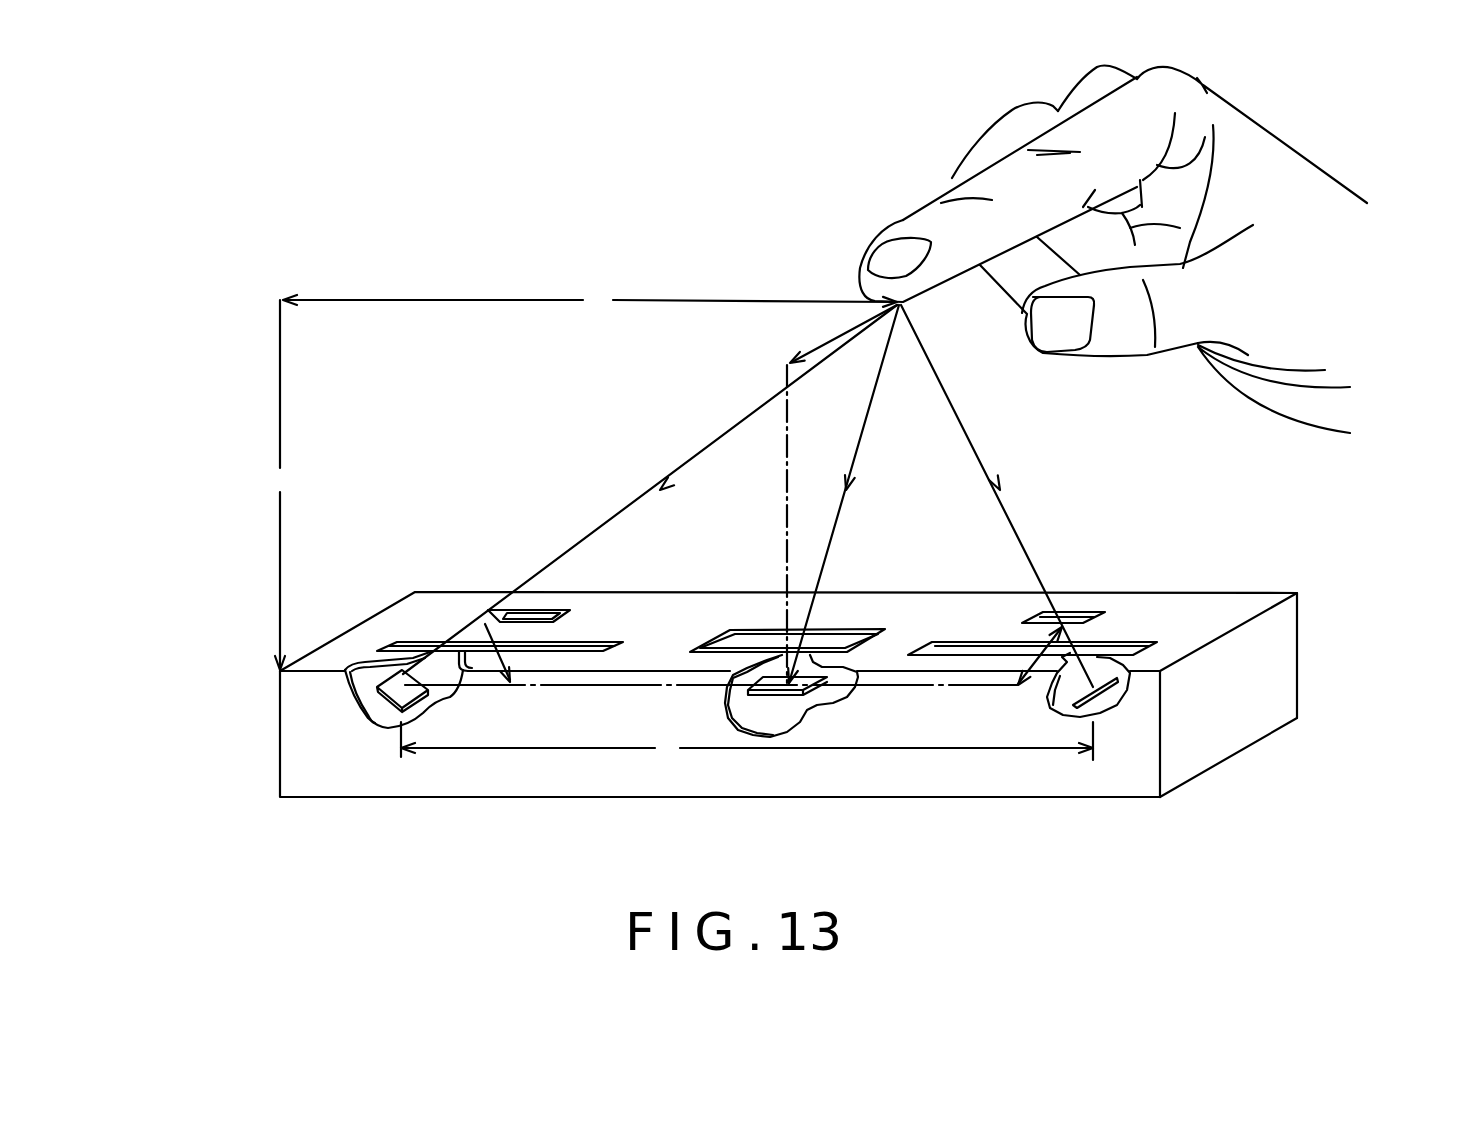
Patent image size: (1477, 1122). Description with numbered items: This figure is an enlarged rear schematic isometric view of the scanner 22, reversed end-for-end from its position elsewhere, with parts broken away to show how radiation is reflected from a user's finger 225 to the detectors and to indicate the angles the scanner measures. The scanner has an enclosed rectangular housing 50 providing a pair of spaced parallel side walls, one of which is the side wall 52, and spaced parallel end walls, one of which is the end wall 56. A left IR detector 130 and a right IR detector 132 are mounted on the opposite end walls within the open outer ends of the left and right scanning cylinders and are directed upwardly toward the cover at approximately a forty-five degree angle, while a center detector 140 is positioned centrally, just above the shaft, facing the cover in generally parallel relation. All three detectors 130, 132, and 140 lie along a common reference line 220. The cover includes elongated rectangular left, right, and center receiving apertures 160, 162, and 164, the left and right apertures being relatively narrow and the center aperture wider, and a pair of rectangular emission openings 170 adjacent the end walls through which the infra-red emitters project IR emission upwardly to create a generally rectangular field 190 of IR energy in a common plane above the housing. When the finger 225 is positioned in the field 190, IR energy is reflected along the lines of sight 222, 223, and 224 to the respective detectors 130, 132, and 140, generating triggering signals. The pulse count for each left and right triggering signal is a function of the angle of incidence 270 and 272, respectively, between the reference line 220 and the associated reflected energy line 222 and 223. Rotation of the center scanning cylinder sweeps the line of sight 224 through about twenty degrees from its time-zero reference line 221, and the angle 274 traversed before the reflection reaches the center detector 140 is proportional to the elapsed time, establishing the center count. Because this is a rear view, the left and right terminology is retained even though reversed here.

The scanner 22 is at (1337, 552).
The housing 50 is at (1298, 660).
The side wall 52 is at (663, 787).
The end wall 56 is at (1213, 731).
The left IR detector 130 is at (1097, 702).
The right IR detector 132 is at (370, 705).
The center detector 140 is at (788, 692).
The left receiving aperture 160 is at (1125, 645).
The right receiving aperture 162 is at (598, 640).
The center receiving aperture 164 is at (745, 630).
The emission openings 170 is at (505, 669).
The field of IR energy 190 is at (465, 465).
The reference line 220 is at (668, 688).
The reference line 221 is at (778, 360).
The line of sight 222 is at (1005, 482).
The line of sight 223 is at (707, 442).
The line of sight 224 is at (838, 512).
The finger 225 is at (889, 272).
The angle of incidence 270 is at (1040, 615).
The angle of incidence 272 is at (485, 639).
The angle 274 is at (802, 565).